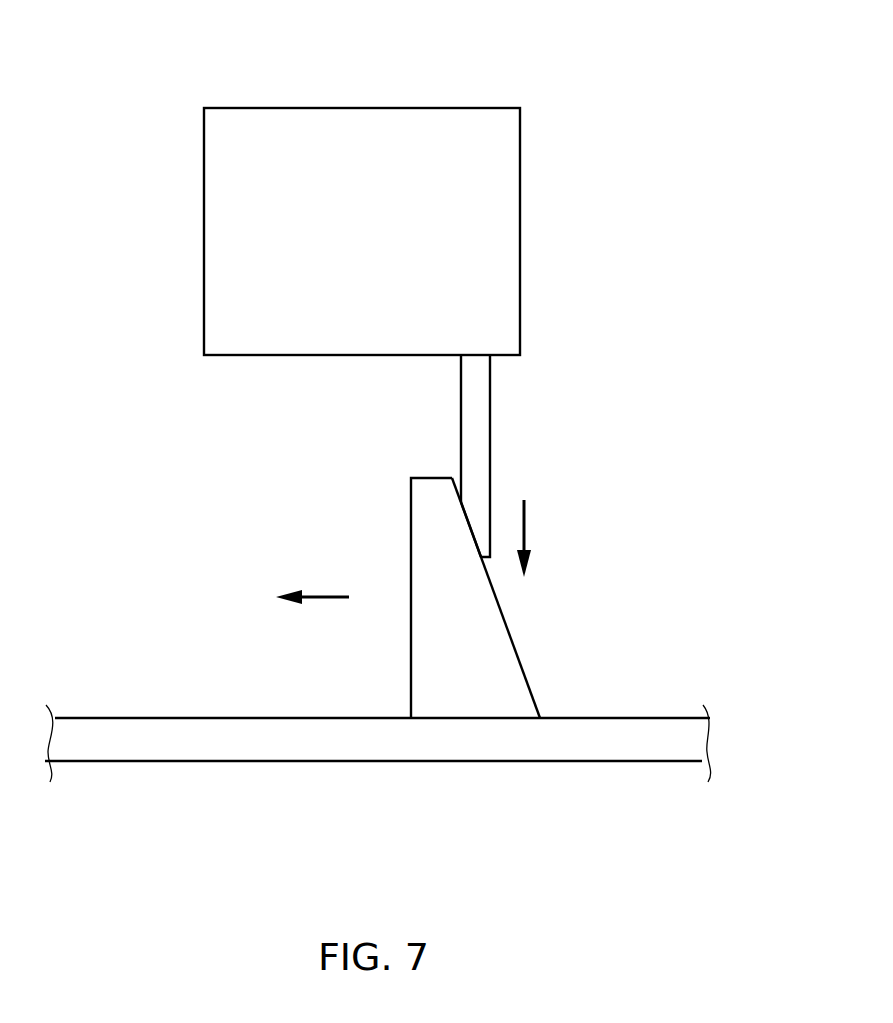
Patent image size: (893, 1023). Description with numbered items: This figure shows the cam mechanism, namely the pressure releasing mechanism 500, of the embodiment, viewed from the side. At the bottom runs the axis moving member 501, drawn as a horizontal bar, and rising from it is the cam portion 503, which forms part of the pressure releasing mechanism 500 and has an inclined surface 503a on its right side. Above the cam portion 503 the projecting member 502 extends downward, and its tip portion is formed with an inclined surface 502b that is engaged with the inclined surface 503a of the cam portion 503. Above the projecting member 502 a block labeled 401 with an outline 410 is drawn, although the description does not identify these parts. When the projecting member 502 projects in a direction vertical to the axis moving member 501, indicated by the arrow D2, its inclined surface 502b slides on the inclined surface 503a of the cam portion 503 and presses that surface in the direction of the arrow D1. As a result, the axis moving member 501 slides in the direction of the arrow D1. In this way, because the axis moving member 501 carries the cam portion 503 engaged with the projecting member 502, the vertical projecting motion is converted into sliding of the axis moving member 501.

The device 401 is at (393, 87).
The housing 410 is at (513, 153).
The pressure releasing mechanism 500 is at (653, 331).
The axis moving member 501 is at (612, 747).
The projecting member 502 is at (482, 388).
The inclined surface 502b is at (469, 530).
The cam portion 503 is at (420, 550).
The inclined surface 503a is at (524, 670).
The arrow D1 is at (323, 600).
The arrow D2 is at (527, 522).